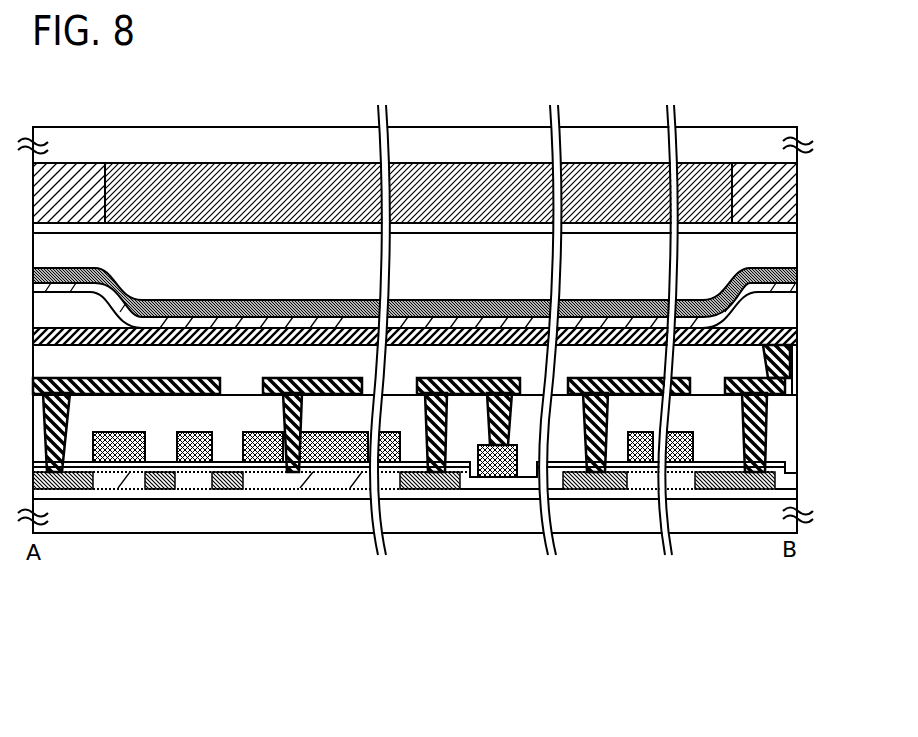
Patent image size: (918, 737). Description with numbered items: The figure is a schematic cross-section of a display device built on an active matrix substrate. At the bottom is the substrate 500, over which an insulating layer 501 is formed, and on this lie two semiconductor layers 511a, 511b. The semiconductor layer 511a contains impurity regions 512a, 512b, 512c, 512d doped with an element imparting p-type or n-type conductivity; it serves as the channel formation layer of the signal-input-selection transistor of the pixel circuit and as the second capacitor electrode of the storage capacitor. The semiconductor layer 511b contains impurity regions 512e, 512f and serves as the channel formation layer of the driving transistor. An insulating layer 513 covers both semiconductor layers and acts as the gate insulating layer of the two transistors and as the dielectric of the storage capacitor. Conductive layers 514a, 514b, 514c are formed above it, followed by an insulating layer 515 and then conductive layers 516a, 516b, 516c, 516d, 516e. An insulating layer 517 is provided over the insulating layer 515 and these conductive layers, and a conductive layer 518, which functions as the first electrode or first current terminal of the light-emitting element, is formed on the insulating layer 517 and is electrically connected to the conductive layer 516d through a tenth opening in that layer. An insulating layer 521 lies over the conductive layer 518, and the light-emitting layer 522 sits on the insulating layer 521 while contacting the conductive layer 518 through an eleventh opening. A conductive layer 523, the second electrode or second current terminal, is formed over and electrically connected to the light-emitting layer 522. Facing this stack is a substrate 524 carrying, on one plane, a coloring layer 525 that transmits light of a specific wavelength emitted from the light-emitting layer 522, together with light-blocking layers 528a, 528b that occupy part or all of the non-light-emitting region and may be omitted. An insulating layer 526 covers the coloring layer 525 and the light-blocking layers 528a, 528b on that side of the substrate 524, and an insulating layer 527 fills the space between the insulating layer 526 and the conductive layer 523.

The substrate 500 is at (387, 520).
The insulating layer 501 is at (200, 500).
The semiconductor layer 511a is at (75, 493).
The semiconductor layer 511b is at (673, 488).
The impurity region 512a is at (48, 478).
The impurity region 512b is at (170, 480).
The impurity region 512c is at (245, 480).
The impurity region 512d is at (419, 486).
The impurity region 512e is at (593, 480).
The impurity region 512f is at (732, 486).
The insulating layer 513 is at (532, 486).
The conductive layer 514a is at (120, 445).
The conductive layer 514b is at (323, 445).
The conductive layer 514c is at (493, 476).
The insulating layer 515 is at (248, 489).
The conductive layer 516a is at (70, 395).
The conductive layer 516b is at (460, 395).
The conductive layer 516c is at (638, 395).
The conductive layer 516d is at (772, 400).
The conductive layer 516e is at (250, 417).
The insulating layer 517 is at (205, 357).
The conductive layer 518 is at (247, 300).
The insulating layer 521 is at (107, 312).
The light-emitting layer 522 is at (443, 322).
The conductive layer 523 is at (498, 298).
The substrate 524 is at (723, 150).
The coloring layer 525 is at (645, 200).
The insulating layer 526 is at (605, 228).
The insulating layer 527 is at (532, 253).
The light-blocking layer 528a is at (55, 165).
The light-blocking layer 528b is at (770, 167).